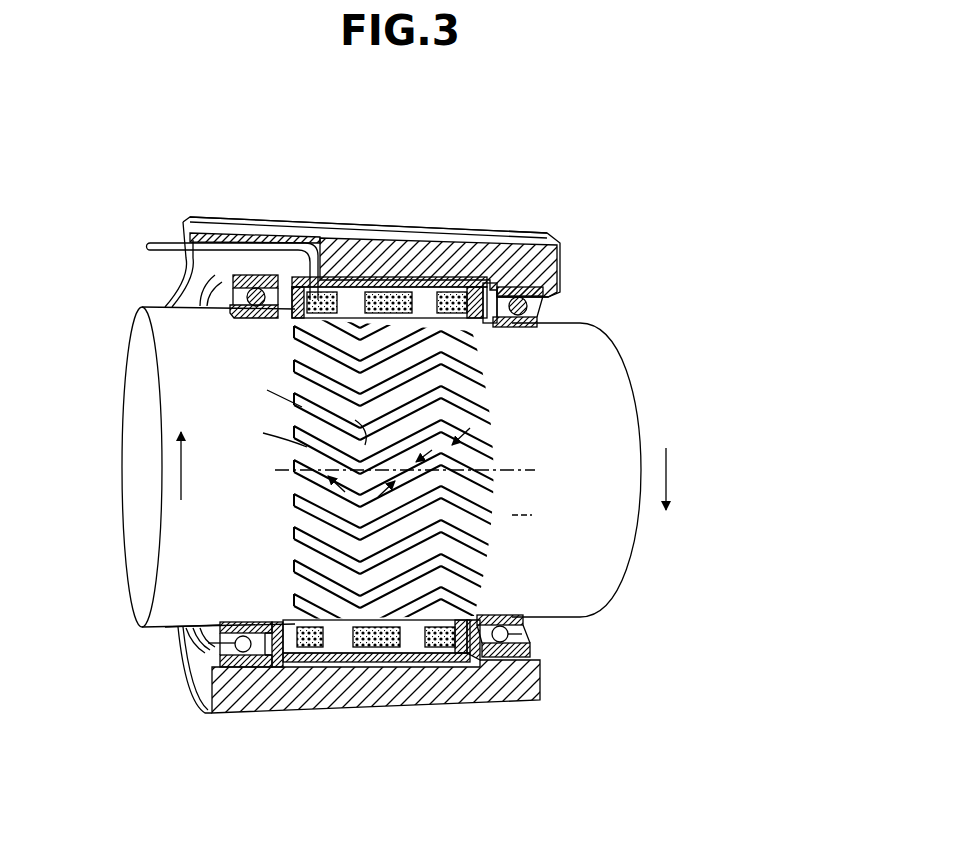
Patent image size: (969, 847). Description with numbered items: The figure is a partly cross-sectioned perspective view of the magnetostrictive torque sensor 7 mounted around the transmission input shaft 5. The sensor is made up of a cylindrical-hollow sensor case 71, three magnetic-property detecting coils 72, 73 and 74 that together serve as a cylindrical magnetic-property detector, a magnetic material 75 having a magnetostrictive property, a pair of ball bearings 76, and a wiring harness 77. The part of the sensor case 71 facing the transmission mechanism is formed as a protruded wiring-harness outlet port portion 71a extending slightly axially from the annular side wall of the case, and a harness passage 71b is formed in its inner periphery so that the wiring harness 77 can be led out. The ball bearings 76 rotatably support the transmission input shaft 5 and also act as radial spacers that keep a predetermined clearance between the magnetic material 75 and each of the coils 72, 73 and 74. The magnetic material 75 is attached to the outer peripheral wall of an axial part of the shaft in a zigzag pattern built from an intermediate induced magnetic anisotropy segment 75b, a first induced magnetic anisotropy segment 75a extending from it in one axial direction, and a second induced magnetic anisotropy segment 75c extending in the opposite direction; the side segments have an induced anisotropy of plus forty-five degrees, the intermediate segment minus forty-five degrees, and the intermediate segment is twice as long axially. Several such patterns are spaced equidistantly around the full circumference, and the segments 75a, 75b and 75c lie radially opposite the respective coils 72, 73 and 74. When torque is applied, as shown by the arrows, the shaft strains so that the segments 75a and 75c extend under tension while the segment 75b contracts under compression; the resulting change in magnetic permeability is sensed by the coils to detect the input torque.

The magnetostrictive torque sensor 7 is at (290, 210).
The transmission input shaft 5 is at (600, 550).
The sensor case 71 is at (522, 255).
The protruded wiring-harness outlet port portion 71a is at (215, 220).
The harness passage 71b is at (265, 233).
The magnetic-property detecting coil 72 is at (331, 272).
The magnetic-property detecting coil 73 is at (388, 280).
The magnetic-property detecting coil 74 is at (459, 276).
The magnetic material 75 is at (495, 385).
The first induced magnetic anisotropy segment 75a is at (300, 372).
The intermediate induced magnetic anisotropy segment 75b is at (490, 437).
The second induced magnetic anisotropy segment 75c is at (495, 420).
The ball bearing 76 is at (246, 296).
The wiring harness 77 is at (163, 240).